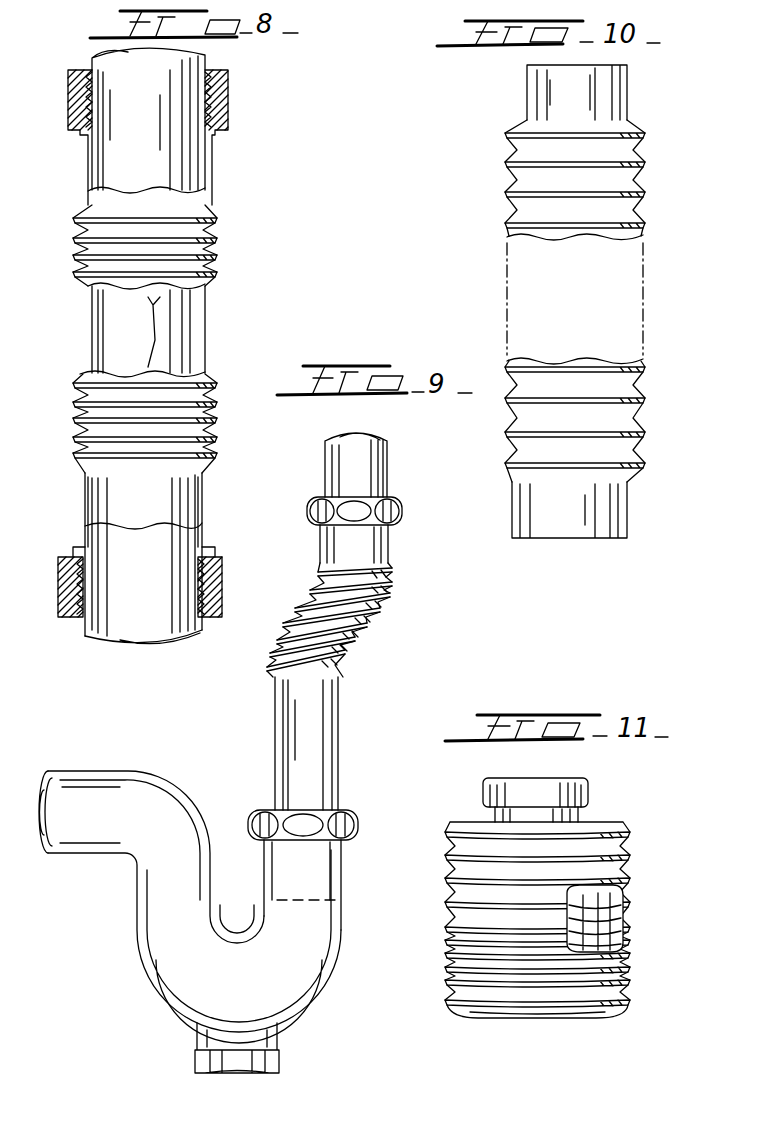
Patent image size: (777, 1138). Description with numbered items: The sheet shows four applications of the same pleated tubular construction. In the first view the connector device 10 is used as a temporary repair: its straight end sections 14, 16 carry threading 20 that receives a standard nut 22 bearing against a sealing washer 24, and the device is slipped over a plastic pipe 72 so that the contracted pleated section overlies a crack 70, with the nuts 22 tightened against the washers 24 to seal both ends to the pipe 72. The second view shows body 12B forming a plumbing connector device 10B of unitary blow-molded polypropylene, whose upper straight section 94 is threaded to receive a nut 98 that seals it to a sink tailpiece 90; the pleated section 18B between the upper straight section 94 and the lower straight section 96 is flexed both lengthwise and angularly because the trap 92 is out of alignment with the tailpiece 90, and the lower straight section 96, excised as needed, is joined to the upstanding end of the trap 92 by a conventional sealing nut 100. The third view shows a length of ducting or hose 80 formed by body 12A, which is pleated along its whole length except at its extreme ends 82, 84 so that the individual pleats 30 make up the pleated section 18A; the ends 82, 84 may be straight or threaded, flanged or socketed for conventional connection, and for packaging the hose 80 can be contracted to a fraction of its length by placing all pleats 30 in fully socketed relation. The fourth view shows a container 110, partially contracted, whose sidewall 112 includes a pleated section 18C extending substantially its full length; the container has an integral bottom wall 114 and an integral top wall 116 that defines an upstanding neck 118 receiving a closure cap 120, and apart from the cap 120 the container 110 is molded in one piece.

In FIG. 8, the connector device 10 is at (148, 351).
In FIG. 8, the straight end section 14 is at (206, 172).
In FIG. 8, the straight end section 16 is at (117, 500).
In FIG. 8, the threading 20 is at (213, 573).
In FIG. 8, the nut 22 is at (222, 583).
In FIG. 8, the sealing washer 24 is at (77, 603).
In FIG. 8, the crack 70 is at (157, 333).
In FIG. 8, the plastic pipe 72 is at (117, 613).
In FIG. 10, the ducting or hose 80 is at (528, 176).
In FIG. 10, the end 82 is at (537, 87).
In FIG. 10, the end 84 is at (608, 516).
In FIG. 10, the pleat 30 is at (498, 143).
In FIG. 11, the pleat 30 is at (438, 890).
In FIG. 10, the pleated section 18A is at (528, 186).
In FIG. 9, the pleated section 18B is at (395, 622).
In FIG. 11, the pleated section 18C is at (523, 899).
In FIG. 10, the body 12A is at (542, 314).
In FIG. 9, the body 12B is at (379, 500).
In FIG. 9, the tailpiece 90 is at (380, 476).
In FIG. 9, the upper straight section 94 is at (385, 548).
In FIG. 9, the nut 98 is at (322, 508).
In FIG. 9, the lower straight section 96 is at (333, 767).
In FIG. 9, the sealing nut 100 is at (268, 817).
In FIG. 9, the trap 92 is at (323, 927).
In FIG. 9, the plumbing connector device 10B is at (254, 753).
In FIG. 11, the container 110 is at (523, 903).
In FIG. 11, the sidewall 112 is at (436, 842).
In FIG. 11, the bottom wall 114 is at (548, 1020).
In FIG. 11, the top wall 116 is at (597, 822).
In FIG. 11, the neck 118 is at (503, 817).
In FIG. 11, the closure cap 120 is at (548, 793).